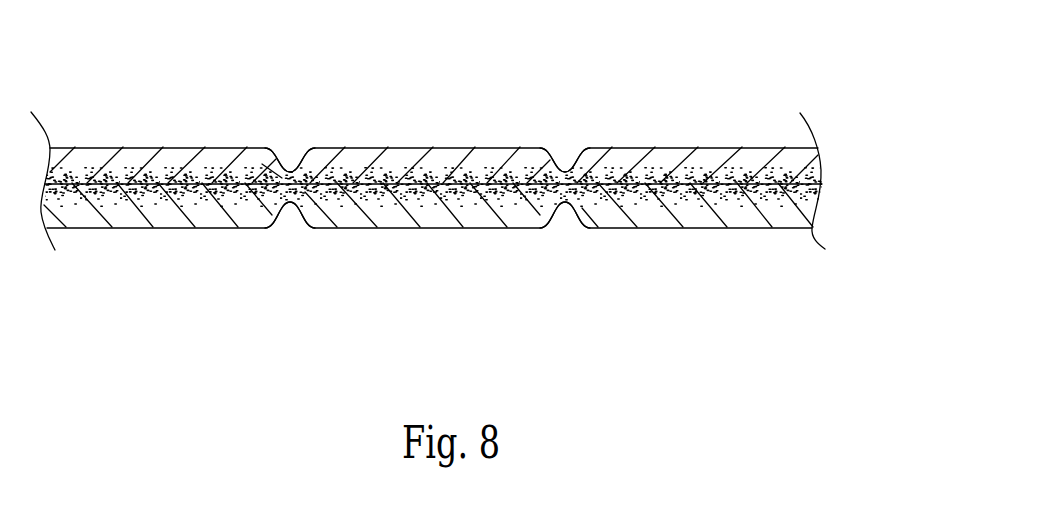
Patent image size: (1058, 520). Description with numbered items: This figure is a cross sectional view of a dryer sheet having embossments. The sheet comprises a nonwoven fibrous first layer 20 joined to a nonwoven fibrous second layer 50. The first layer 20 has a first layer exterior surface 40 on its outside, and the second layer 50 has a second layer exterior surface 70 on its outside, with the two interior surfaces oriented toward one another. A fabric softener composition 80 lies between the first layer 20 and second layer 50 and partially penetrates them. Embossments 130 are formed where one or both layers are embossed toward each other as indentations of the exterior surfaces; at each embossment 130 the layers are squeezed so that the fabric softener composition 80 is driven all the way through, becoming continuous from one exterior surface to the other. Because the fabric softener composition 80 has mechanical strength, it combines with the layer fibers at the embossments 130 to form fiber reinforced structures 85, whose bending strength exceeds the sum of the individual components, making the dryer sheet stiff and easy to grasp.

The first layer 20 is at (788, 209).
The first layer exterior surface 40 is at (408, 228).
The second layer 50 is at (788, 161).
The second layer exterior surface 70 is at (738, 148).
The fabric softener composition 80 is at (190, 200).
The fiber reinforced structure 85 is at (284, 179).
The embossment 130 is at (290, 170).